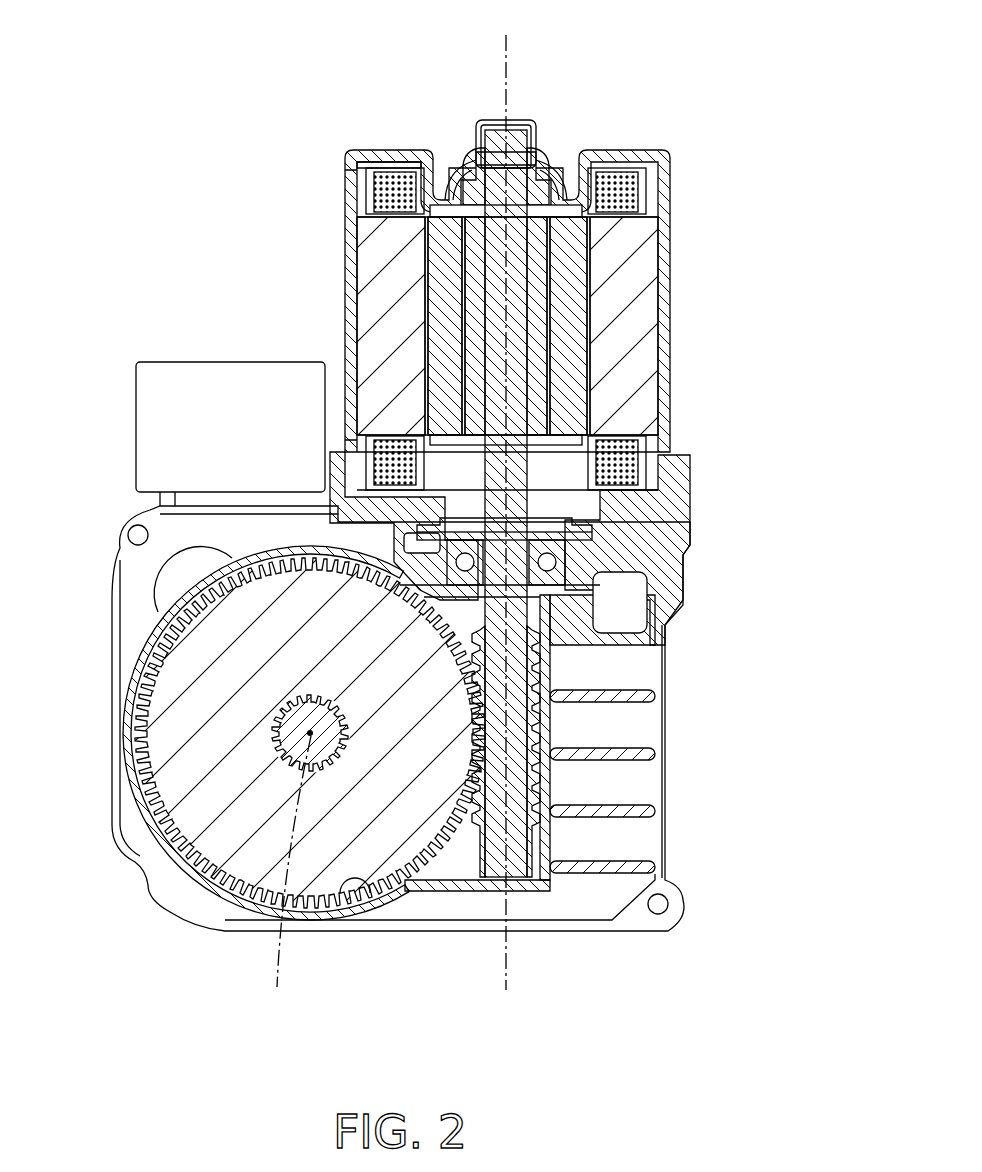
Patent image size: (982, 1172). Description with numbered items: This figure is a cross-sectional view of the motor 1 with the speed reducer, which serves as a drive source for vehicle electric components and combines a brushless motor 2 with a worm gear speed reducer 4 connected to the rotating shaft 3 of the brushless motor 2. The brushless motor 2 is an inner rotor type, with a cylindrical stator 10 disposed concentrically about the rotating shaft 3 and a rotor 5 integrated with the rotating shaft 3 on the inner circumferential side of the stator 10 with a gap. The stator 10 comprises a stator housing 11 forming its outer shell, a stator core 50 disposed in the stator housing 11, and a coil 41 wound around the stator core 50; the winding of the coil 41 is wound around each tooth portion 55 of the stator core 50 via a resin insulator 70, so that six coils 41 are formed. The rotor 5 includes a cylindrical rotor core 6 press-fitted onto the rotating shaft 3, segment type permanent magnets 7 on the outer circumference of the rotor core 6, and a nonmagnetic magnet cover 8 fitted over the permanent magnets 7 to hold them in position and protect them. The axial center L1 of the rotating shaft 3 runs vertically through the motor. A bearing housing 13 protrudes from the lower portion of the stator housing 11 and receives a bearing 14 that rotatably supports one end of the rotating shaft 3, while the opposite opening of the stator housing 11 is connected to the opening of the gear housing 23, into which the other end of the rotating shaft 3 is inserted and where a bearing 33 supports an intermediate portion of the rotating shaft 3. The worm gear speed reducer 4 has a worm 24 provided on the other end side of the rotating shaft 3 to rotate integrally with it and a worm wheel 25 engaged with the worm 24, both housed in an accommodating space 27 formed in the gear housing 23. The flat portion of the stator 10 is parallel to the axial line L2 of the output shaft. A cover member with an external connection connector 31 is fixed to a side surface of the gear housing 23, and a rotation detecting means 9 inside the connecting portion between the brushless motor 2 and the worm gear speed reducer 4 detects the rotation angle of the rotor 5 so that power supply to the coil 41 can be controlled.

The motor with the speed reducer 1 is at (595, 968).
The brushless motor 2 is at (348, 140).
The rotating shaft 3 is at (585, 164).
The worm gear speed reducer 4 is at (395, 950).
The rotor 5 is at (600, 281).
The rotor core 6 is at (545, 370).
The permanent magnet 7 is at (568, 330).
The magnet cover 8 is at (590, 248).
The rotation detecting means 9 is at (662, 452).
The stator 10 is at (320, 233).
The stator housing 11 is at (345, 200).
The bearing housing 13 is at (520, 122).
The bearing 14 is at (540, 162).
The gear housing 23 is at (128, 785).
The worm 24 is at (548, 716).
The worm wheel 25 is at (240, 835).
The accommodating space 27 is at (352, 868).
The external connection connector 31 is at (220, 378).
The bearing 33 is at (560, 566).
The coil 41 is at (392, 180).
The stator core 50 is at (370, 270).
The tooth portion 55 is at (400, 315).
The insulator 70 is at (350, 156).
The axial center L1 is at (512, 52).
The axial line L2 is at (285, 877).